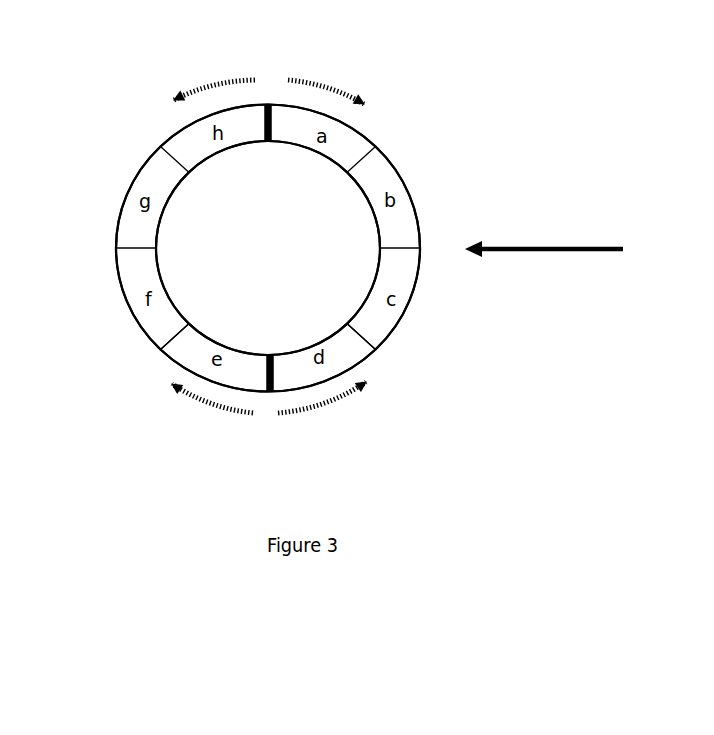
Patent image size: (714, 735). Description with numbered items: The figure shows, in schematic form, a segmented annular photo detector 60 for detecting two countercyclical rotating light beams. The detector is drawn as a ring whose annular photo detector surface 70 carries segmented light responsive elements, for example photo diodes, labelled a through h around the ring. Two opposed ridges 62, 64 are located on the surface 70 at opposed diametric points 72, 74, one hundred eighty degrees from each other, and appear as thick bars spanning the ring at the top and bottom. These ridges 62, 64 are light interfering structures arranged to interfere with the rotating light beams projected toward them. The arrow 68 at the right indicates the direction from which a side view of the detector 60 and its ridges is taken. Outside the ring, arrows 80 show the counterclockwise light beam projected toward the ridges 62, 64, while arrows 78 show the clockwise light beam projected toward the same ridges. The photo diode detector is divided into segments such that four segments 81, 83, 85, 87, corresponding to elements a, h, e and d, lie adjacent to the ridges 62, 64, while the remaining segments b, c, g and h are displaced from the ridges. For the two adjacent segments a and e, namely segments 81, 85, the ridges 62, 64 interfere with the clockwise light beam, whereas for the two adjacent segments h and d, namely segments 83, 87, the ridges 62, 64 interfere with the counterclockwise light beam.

The segmented annular photo detector 60 is at (107, 172).
The ridge 62 is at (270, 83).
The ridge 64 is at (266, 353).
The arrow 68 is at (537, 250).
The annular photo detector surface 70 is at (412, 193).
The diametric point 72 is at (270, 143).
The diametric point 74 is at (274, 353).
The arrows for light beam 13 78 is at (352, 93).
The arrows for light beam 11 80 is at (205, 83).
The segment a 81 is at (357, 120).
The segment h 83 is at (217, 156).
The segment e 85 is at (218, 343).
The segment d 87 is at (330, 338).